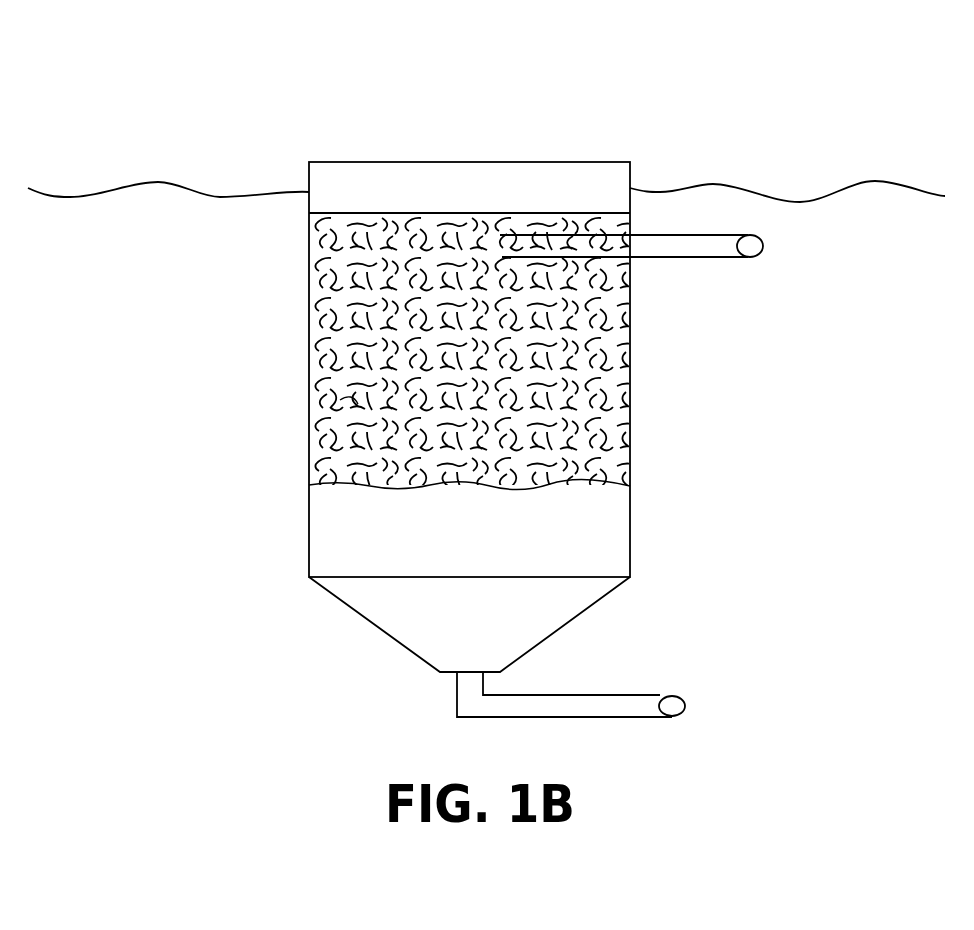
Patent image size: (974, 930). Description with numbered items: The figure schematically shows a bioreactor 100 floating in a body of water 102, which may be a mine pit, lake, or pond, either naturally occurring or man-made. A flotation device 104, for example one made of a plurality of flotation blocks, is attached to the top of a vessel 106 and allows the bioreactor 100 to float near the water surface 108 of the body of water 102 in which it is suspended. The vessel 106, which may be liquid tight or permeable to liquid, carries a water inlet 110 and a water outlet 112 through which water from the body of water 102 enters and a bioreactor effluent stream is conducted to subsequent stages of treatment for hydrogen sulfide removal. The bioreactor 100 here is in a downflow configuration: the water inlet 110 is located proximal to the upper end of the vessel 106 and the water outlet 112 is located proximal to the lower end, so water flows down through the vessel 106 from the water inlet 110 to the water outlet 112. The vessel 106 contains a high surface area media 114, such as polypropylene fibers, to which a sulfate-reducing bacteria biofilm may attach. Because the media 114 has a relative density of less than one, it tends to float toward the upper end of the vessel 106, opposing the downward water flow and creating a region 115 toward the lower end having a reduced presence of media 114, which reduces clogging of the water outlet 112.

The bioreactor 100 is at (345, 86).
The body of water 102 is at (168, 415).
The flotation device 104 is at (497, 190).
The vessel 106 is at (631, 418).
The water surface 108 is at (776, 200).
The water inlet 110 is at (757, 251).
The water outlet 112 is at (674, 700).
The high surface area media 114 is at (356, 397).
The region 115 is at (590, 531).